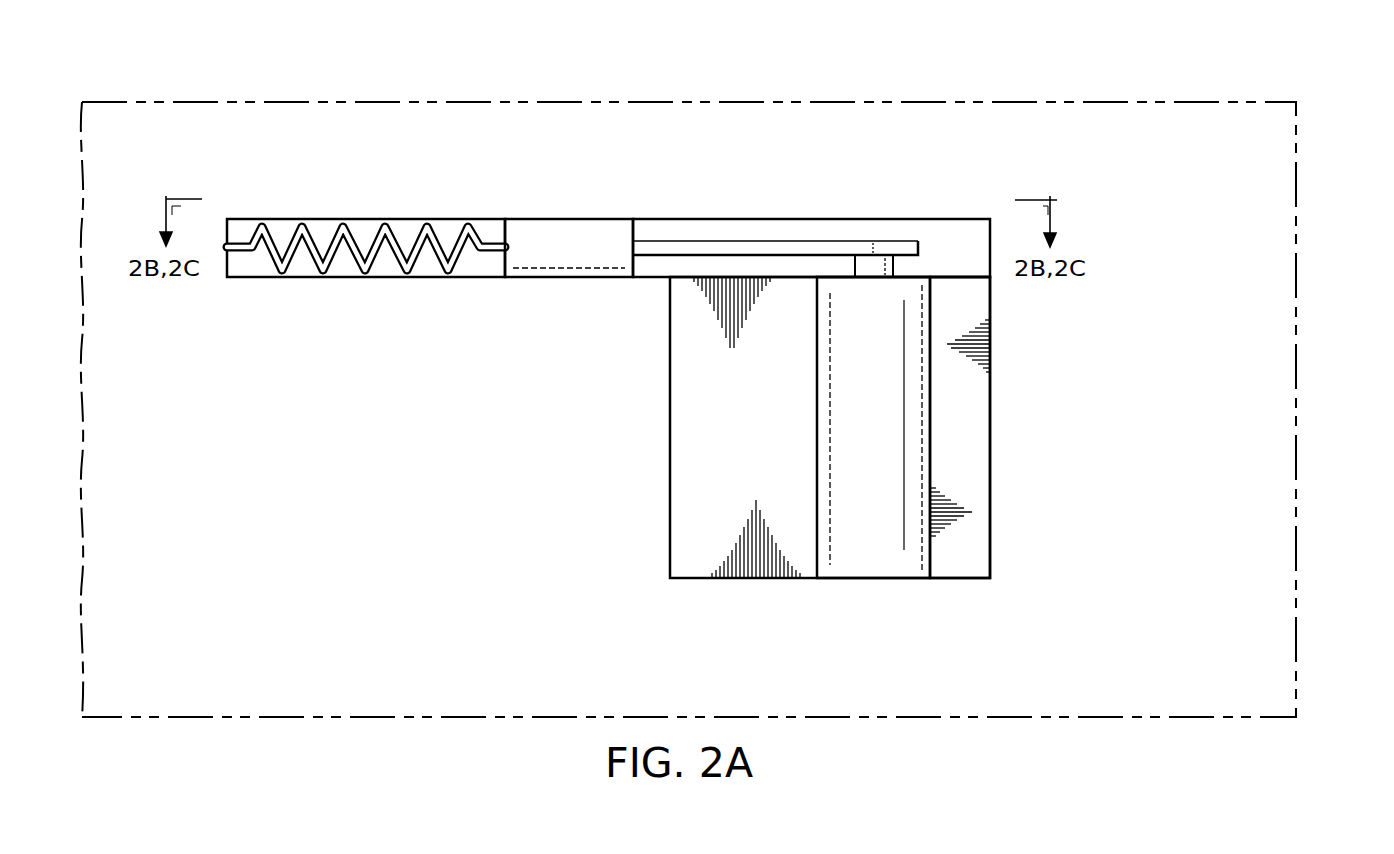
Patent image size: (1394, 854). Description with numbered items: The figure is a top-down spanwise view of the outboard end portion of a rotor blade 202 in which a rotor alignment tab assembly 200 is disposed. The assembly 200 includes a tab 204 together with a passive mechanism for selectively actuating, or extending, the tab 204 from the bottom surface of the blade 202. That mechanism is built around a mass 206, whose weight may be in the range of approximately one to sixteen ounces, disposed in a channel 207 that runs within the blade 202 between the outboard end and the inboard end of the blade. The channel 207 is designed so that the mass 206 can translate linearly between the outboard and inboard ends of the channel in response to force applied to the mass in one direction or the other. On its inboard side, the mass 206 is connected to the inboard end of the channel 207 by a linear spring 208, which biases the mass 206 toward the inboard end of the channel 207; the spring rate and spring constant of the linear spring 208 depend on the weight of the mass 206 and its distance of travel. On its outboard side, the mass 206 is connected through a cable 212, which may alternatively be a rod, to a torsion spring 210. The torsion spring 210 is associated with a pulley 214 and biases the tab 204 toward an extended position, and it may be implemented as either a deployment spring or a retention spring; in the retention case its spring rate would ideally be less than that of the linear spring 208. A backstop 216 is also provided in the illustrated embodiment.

The rotor alignment tab assembly 200 is at (397, 86).
The rotor blade 202 is at (1303, 293).
The tab 204 is at (677, 478).
The mass 206 is at (568, 233).
The channel 207 is at (300, 270).
The linear spring 208 is at (282, 233).
The torsion spring 210 is at (902, 244).
The cable 212 is at (733, 240).
The pulley 214 is at (817, 428).
The backstop 216 is at (980, 457).